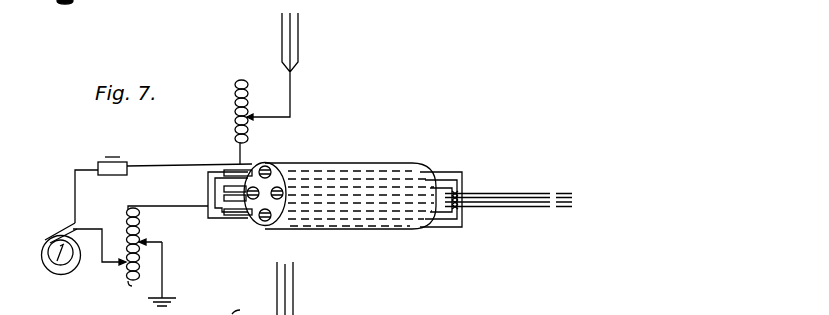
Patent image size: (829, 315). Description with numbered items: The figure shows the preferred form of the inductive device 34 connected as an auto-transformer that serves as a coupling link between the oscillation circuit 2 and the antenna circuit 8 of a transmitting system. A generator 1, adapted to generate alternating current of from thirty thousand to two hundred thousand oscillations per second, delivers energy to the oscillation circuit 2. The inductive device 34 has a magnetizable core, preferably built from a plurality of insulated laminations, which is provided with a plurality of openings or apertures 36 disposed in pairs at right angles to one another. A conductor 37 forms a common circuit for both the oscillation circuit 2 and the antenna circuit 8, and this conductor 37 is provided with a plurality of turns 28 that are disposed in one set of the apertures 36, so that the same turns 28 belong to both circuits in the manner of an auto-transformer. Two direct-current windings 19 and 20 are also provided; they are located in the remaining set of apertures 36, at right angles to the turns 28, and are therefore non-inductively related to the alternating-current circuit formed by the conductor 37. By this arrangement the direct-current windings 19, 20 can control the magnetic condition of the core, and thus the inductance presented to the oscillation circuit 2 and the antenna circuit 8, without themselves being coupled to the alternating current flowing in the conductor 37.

The generator 1 is at (61, 249).
The oscillation circuit 2 is at (165, 166).
The antenna circuit 8 is at (244, 163).
The direct current winding 19 is at (232, 180).
The direct current winding 20 is at (234, 211).
The turns 28 is at (207, 190).
The inductive device 34 is at (364, 163).
The apertures 36 is at (270, 171).
The conductor 37 is at (305, 173).